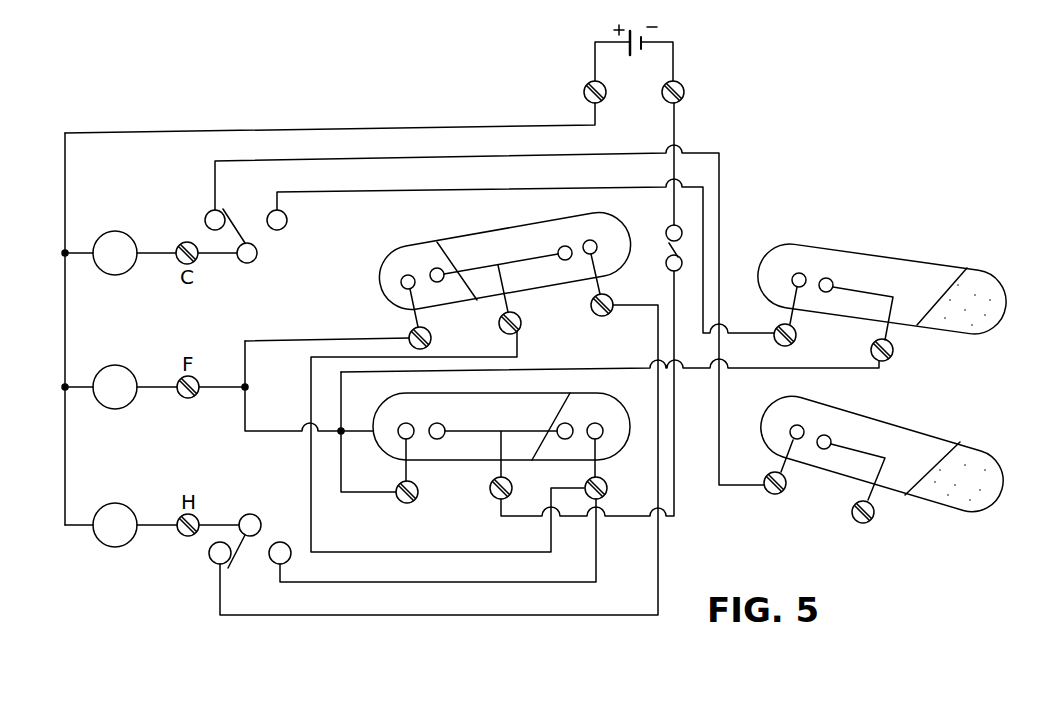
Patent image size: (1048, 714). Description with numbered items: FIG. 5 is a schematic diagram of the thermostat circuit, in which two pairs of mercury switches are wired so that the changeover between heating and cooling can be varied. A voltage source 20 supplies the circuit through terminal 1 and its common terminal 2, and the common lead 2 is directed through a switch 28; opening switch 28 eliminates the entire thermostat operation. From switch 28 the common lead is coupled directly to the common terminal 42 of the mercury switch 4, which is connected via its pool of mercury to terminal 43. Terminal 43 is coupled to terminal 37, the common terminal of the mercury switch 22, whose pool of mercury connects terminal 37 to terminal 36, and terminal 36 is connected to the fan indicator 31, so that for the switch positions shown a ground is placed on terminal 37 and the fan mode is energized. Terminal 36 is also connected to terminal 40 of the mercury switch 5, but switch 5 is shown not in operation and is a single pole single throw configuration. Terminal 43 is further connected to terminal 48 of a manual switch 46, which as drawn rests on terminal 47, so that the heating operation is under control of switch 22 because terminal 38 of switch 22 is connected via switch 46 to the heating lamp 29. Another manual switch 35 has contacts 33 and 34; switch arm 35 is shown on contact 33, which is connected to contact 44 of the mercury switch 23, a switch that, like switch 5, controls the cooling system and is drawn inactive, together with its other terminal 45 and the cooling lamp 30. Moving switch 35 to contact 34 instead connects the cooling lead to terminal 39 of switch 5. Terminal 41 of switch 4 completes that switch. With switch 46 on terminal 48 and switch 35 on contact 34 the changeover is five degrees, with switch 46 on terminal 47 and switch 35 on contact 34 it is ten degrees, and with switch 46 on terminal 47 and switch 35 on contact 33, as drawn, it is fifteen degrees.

The fuse 1 is at (601, 102).
The common terminal 2 is at (679, 102).
The voltage source 20 is at (645, 32).
The mercury switch 22 is at (471, 232).
The mercury switch 23 is at (904, 418).
The switch 28 is at (671, 224).
The heating lamp 29 is at (128, 508).
The cooling lamp 30 is at (119, 210).
The fan indicator 31 is at (127, 364).
The contact 33 is at (205, 218).
The contact 34 is at (288, 221).
The manual switch 35 is at (256, 259).
The terminal 36 is at (432, 337).
The common terminal 37 is at (522, 322).
The terminal 38 is at (615, 294).
The terminal 39 is at (796, 340).
The terminal 40 is at (892, 356).
The mercury switch 4 is at (510, 396).
The terminal 41 is at (417, 488).
The common terminal 42 is at (510, 478).
The terminal 43 is at (603, 478).
The contact 44 is at (786, 481).
The terminal 45 is at (874, 520).
The mercury switch 5 is at (866, 250).
The manual switch 46 is at (260, 508).
The terminal 47 is at (212, 568).
The terminal 48 is at (277, 562).